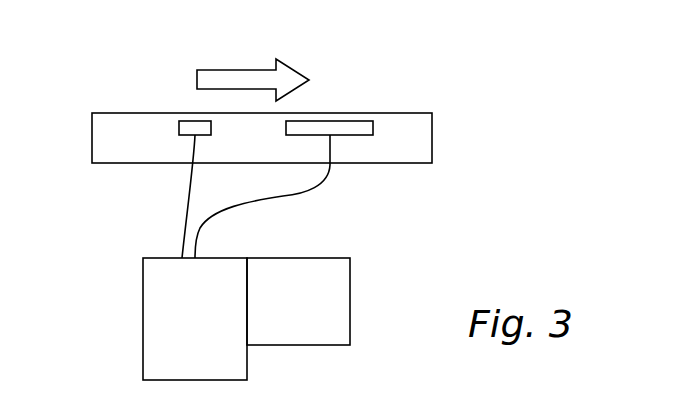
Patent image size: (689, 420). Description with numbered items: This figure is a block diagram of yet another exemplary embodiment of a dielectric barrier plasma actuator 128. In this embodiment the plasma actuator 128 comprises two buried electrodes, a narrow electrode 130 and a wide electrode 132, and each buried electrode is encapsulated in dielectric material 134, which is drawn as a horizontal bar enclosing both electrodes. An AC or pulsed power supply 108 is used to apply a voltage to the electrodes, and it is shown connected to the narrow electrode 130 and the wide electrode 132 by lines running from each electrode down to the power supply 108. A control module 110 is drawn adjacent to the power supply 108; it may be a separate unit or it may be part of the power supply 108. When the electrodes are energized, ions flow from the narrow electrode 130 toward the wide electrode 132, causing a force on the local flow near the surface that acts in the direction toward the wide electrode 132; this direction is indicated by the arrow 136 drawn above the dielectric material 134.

The plasma actuator 128 is at (345, 58).
The narrow electrode 130 is at (188, 121).
The wide electrode 132 is at (352, 121).
The dielectric material 134 is at (112, 113).
The direction arrow 136 is at (217, 70).
The power supply 108 is at (220, 335).
The control module 110 is at (324, 317).